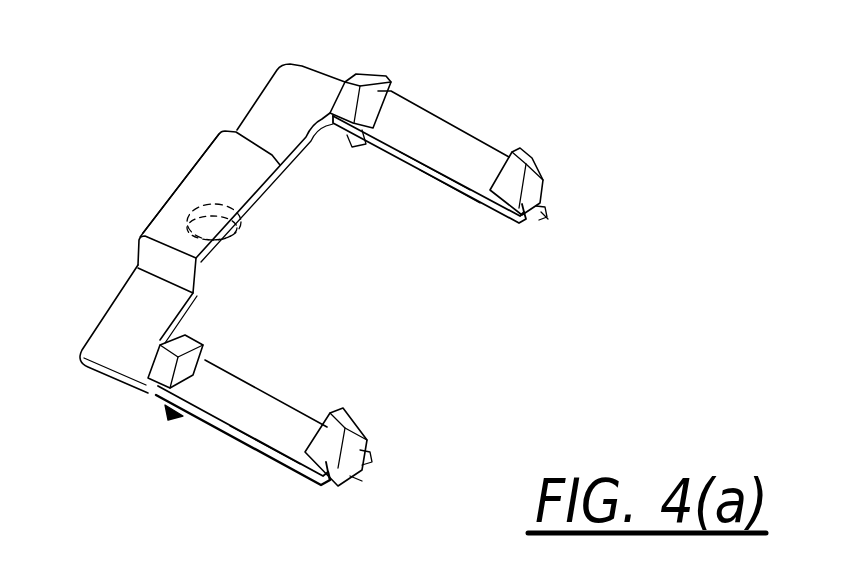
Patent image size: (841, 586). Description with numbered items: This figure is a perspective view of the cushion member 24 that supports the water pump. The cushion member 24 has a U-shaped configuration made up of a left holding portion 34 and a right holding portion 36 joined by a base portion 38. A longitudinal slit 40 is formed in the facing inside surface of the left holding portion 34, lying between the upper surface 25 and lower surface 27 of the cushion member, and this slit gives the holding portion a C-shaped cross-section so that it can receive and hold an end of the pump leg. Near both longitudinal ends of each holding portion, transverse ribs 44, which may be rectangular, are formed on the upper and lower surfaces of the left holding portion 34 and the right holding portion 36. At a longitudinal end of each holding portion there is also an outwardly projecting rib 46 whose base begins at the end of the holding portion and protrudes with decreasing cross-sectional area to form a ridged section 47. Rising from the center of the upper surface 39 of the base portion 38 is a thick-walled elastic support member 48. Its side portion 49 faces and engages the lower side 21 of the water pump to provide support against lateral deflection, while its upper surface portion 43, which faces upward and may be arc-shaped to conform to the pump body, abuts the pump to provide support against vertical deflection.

The cushion member 24 is at (255, 60).
The upper surface portion 43 is at (224, 166).
The elastic support member 48 is at (206, 188).
The side portion 49 is at (248, 193).
The upper surface 39 is at (140, 296).
The base portion 38 is at (114, 338).
The transverse ribs 44 is at (368, 77).
The left holding portion 34 is at (426, 110).
The upper surface 25 is at (470, 134).
The slit 40 is at (421, 172).
The lower side 21 is at (447, 198).
The outwardly projecting rib 46 is at (538, 220).
The ridged section 47 is at (550, 214).
The right holding portion 36 is at (228, 406).
The lower surface 27 is at (294, 452).